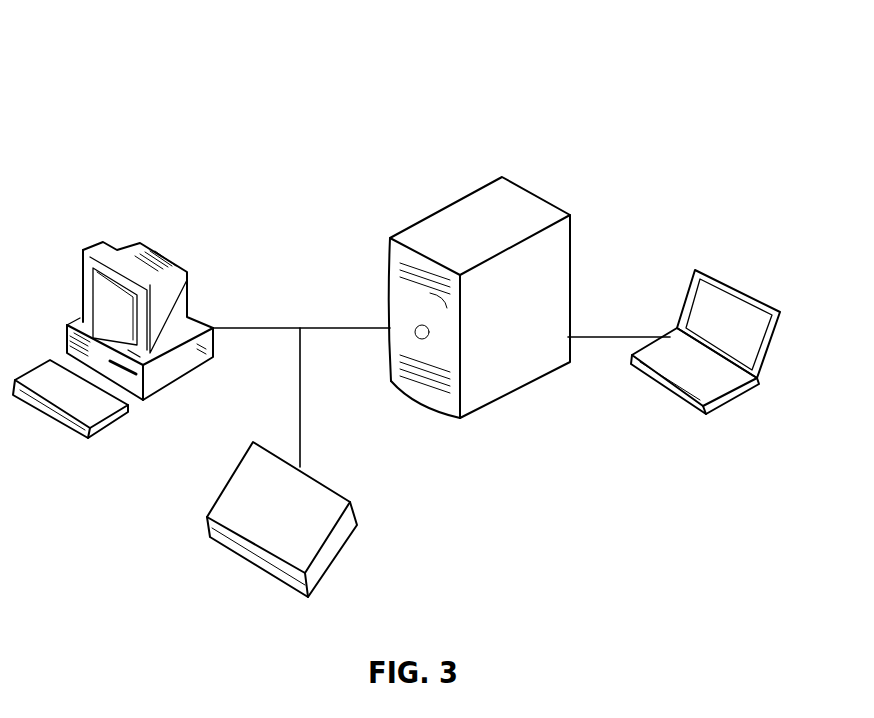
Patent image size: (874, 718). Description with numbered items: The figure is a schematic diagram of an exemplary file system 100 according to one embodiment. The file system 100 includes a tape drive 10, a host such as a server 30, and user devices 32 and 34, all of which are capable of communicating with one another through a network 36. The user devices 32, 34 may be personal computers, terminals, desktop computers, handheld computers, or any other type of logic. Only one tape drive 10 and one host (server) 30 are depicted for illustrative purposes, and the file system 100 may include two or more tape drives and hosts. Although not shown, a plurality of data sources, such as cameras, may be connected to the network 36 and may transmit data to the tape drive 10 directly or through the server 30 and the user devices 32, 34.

The file system 100 is at (216, 88).
The tape drive 10 is at (282, 519).
The host 30 is at (552, 203).
The user device 32 is at (162, 253).
The user device 34 is at (738, 283).
The network 36 is at (300, 418).